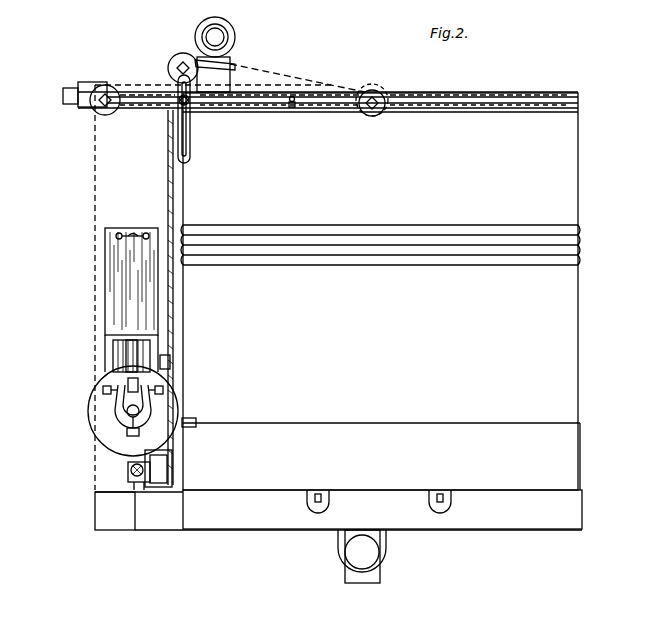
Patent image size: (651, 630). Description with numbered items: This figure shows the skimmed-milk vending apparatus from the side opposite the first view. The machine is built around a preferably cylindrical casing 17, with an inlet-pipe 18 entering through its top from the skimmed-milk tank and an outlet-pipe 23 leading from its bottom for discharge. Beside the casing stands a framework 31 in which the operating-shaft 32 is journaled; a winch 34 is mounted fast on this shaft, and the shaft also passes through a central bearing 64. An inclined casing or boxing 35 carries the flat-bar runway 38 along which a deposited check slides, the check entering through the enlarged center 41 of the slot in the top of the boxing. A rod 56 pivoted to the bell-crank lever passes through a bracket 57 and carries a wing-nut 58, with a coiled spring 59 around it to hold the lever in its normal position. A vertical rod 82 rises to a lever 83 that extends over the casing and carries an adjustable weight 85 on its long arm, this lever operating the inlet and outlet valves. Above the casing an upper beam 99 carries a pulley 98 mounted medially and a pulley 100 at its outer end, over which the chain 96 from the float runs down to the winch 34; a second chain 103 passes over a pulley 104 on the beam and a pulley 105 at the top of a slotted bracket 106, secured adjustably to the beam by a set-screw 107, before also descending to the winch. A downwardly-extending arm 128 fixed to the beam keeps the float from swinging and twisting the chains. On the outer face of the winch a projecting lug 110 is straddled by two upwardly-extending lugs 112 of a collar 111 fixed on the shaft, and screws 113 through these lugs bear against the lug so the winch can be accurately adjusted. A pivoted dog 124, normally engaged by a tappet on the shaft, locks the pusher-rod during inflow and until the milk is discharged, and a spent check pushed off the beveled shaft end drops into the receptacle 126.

The casing 17 is at (579, 273).
The inlet-pipe 18 is at (226, 38).
The outlet-pipe 23 is at (378, 545).
The framework 31 is at (176, 447).
The operating-shaft 32 is at (128, 418).
The winch 34 is at (92, 429).
The casing or boxing 35 is at (105, 297).
The runway 38 is at (131, 352).
The enlarged center of slot 41 is at (133, 230).
The rod 56 is at (131, 471).
The bracket 57 is at (128, 476).
The wing-nut 58 is at (136, 480).
The coiled spring 59 is at (147, 482).
The central bearing 64 is at (171, 362).
The vertical rod 82 is at (174, 187).
The lever 83 is at (64, 95).
The adjustable weight 85 is at (90, 83).
The chain 96 is at (94, 178).
The pulley 98 is at (372, 86).
The upper beam 99 is at (323, 100).
The pulley 100 is at (107, 115).
The chain 103 is at (282, 74).
The pulley 104 is at (382, 95).
The pulley 105 is at (176, 57).
The slotted bracket 106 is at (191, 146).
The set-screw 107 is at (190, 106).
The projecting lug 110 is at (128, 382).
The collar 111 is at (142, 414).
The upwardly-extending lugs 112 is at (118, 400).
The screws 113 is at (103, 390).
The dog 124 is at (196, 424).
The receptacle 126 is at (96, 530).
The downwardly-extending arm 128 is at (293, 108).